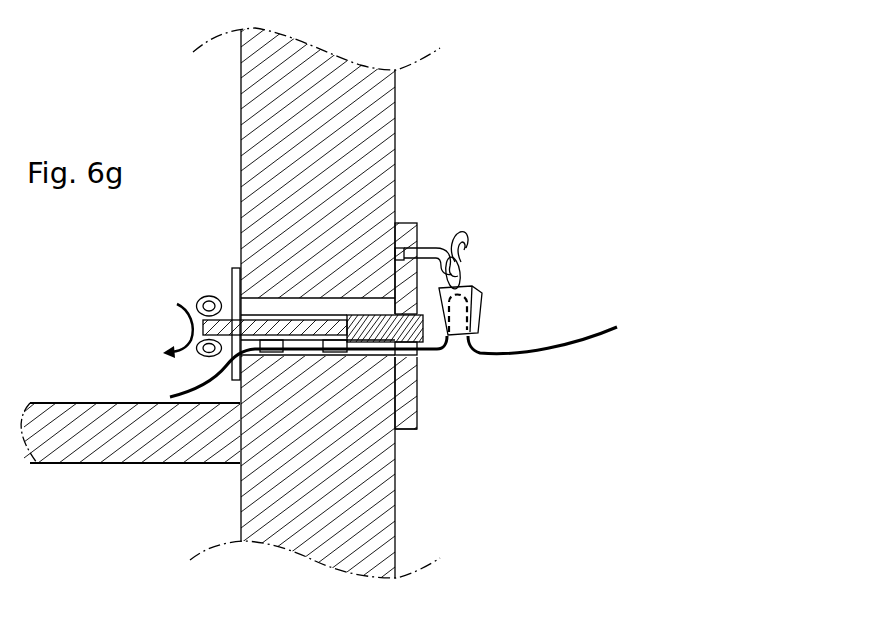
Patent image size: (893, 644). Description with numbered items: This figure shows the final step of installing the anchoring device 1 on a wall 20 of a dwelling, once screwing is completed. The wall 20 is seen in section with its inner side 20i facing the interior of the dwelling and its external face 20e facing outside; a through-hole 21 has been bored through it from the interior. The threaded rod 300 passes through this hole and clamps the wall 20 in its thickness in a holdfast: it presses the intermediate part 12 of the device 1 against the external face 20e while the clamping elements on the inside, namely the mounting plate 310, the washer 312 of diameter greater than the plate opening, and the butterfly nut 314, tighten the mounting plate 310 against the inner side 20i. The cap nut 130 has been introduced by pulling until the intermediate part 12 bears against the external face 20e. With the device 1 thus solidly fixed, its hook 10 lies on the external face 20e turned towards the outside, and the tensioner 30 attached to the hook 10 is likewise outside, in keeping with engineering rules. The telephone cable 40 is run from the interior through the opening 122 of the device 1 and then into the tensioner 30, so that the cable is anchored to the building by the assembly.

The anchoring device 1 is at (426, 438).
The hook 10 is at (468, 247).
The intermediate part 12 is at (417, 232).
The wall 20 is at (388, 102).
The inner side of the wall 20i is at (241, 145).
The external face of the wall 20e is at (397, 153).
The through-hole 21 is at (341, 308).
The tensioner 30 is at (483, 312).
The telephone cable 40 is at (200, 383).
The opening 122 is at (425, 362).
The cap nut 130 is at (288, 327).
The threaded rod 300 is at (236, 300).
The mounting plate 310 is at (232, 268).
The washer 312 is at (222, 300).
The butterfly nut 314 is at (205, 306).